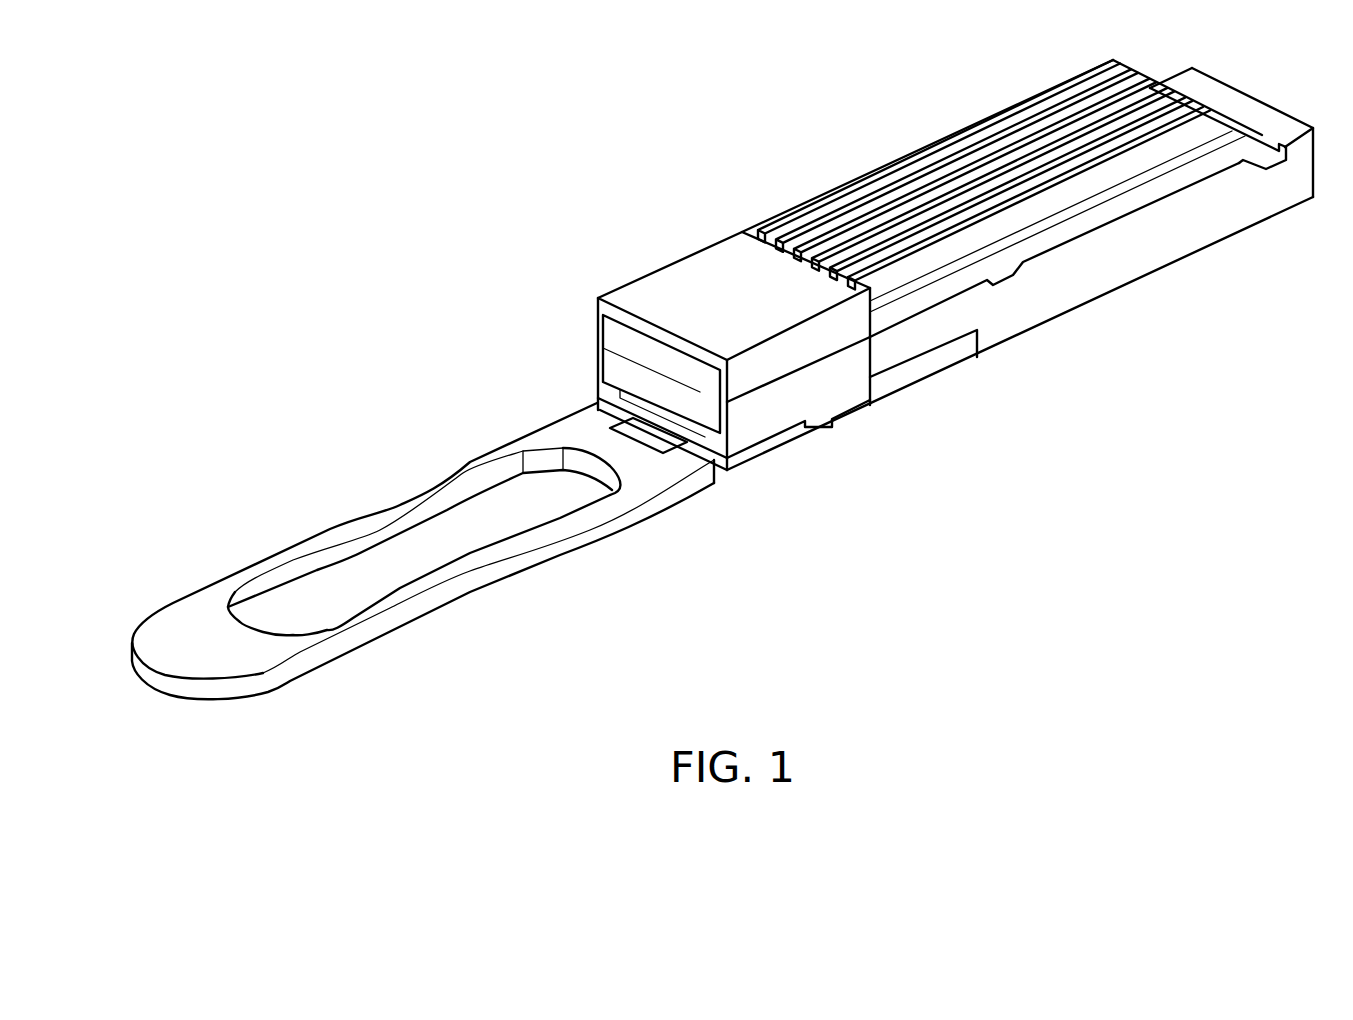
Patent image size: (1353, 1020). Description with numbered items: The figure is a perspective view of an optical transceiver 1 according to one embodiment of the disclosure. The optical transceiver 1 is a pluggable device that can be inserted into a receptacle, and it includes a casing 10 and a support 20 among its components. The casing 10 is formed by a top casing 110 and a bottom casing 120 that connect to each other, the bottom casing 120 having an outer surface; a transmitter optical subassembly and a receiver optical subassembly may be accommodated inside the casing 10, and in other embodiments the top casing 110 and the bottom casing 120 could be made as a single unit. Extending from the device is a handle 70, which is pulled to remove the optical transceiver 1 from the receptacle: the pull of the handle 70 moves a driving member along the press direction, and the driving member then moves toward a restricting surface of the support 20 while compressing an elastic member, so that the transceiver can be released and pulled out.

The optical transceiver 1 is at (420, 214).
The casing 10 is at (1273, 307).
The top casing 110 is at (1142, 177).
The bottom casing 120 is at (1105, 263).
The support 20 is at (925, 378).
The handle 70 is at (572, 436).